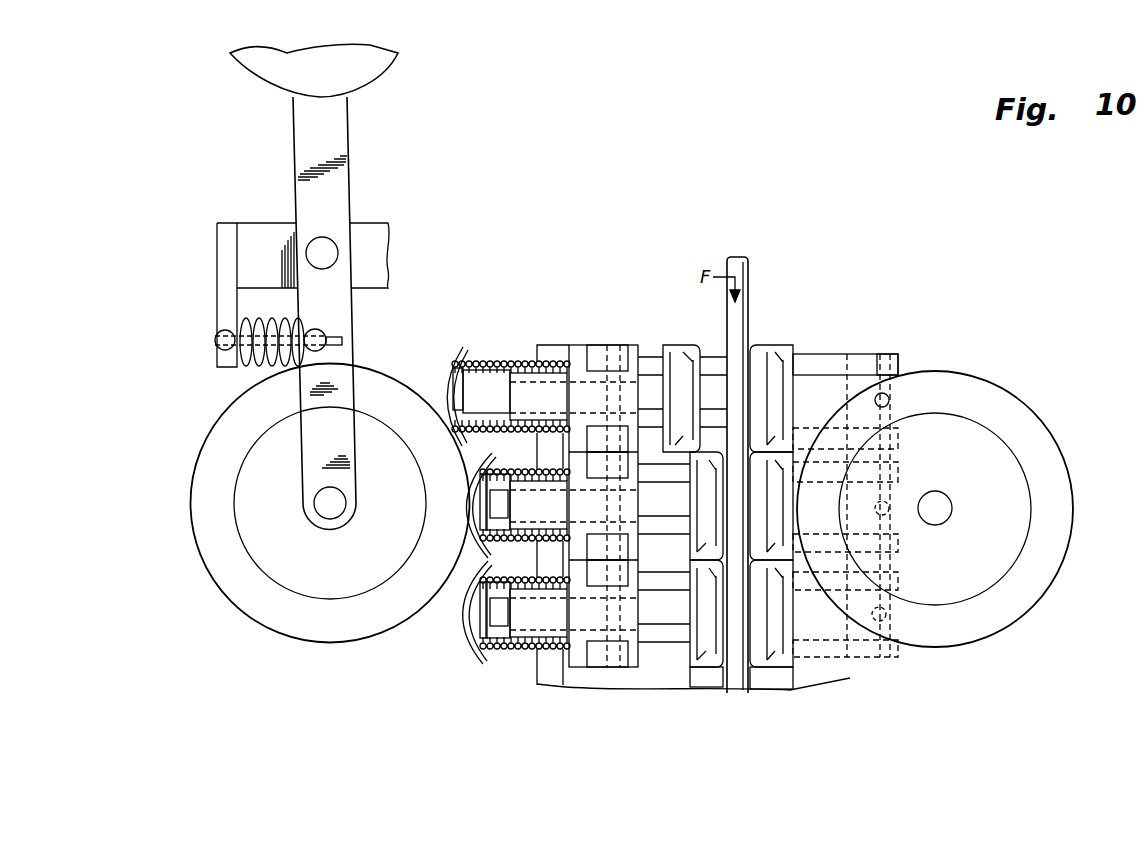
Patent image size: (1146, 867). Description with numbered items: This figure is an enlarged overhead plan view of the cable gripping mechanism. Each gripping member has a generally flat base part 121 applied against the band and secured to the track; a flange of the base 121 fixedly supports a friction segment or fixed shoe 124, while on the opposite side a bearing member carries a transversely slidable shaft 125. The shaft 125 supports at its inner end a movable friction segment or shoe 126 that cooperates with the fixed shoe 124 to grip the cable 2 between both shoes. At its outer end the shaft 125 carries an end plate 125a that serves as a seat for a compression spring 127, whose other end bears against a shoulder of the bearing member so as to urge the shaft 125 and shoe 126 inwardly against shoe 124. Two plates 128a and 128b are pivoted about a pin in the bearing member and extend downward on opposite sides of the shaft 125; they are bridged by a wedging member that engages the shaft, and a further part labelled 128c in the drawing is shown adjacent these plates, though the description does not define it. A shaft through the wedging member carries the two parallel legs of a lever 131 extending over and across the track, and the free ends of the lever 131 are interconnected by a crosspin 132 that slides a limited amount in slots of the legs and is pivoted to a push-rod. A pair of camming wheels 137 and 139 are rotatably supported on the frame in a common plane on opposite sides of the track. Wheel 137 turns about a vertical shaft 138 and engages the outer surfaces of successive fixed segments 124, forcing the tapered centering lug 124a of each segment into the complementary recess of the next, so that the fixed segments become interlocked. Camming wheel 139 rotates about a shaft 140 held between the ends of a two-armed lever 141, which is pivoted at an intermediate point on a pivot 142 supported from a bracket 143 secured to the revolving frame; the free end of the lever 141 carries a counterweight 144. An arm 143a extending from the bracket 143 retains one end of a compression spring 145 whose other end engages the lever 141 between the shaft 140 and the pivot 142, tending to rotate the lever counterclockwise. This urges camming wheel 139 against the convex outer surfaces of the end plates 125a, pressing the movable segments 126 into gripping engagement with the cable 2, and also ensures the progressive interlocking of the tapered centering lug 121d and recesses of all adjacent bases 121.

The cable 2 is at (738, 258).
The base part 121 is at (542, 390).
The tapered centering lug 121d is at (615, 342).
The fixed friction segment 124 is at (760, 350).
The tapered centering lug 124a is at (780, 345).
The shaft 125 is at (540, 385).
The end plate 125a is at (462, 358).
The movable friction segment 126 is at (688, 353).
The compression spring 127 is at (493, 387).
The plate 128a is at (595, 345).
The plate 128b is at (591, 345).
The lower slot 128c is at (595, 445).
The lever 131 is at (822, 398).
The crosspin 132 is at (882, 362).
The camming wheel 137 is at (1060, 453).
The vertical shaft 138 is at (935, 507).
The camming wheel 139 is at (202, 535).
The shaft 140 is at (318, 507).
The two-armed lever 141 is at (338, 366).
The pivot 142 is at (323, 250).
The bracket 143 is at (385, 258).
The arm 143a is at (222, 263).
The counterweight 144 is at (375, 63).
The compression spring 145 is at (250, 367).